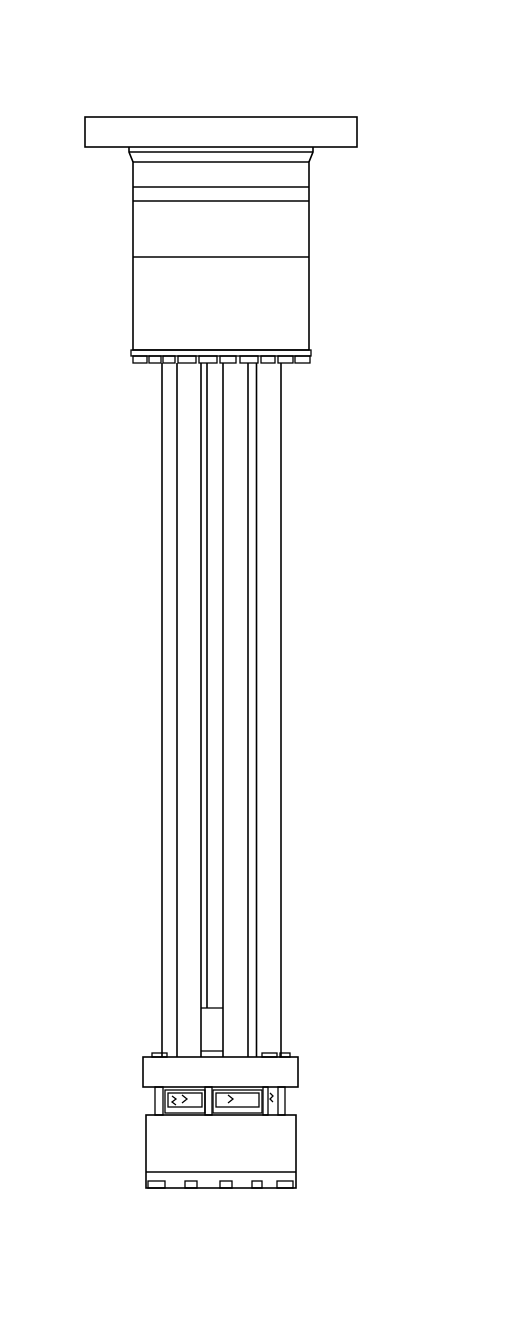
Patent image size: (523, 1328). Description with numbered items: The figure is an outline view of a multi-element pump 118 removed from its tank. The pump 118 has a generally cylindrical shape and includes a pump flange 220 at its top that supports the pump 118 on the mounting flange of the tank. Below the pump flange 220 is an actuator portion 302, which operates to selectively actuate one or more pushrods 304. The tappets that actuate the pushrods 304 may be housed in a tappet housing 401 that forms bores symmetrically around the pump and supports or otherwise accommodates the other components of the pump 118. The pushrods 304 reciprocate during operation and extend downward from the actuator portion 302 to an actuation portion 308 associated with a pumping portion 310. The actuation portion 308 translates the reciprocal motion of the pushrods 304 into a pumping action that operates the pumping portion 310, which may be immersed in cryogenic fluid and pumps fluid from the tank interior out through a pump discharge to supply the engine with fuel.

The pump 118 is at (357, 82).
The pump flange 220 is at (357, 130).
The actuator portion 302 is at (160, 278).
The pushrods 304 is at (273, 577).
The actuation portion 308 is at (288, 1073).
The pumping portion 310 is at (287, 1145).
The tappet housing 401 is at (297, 297).